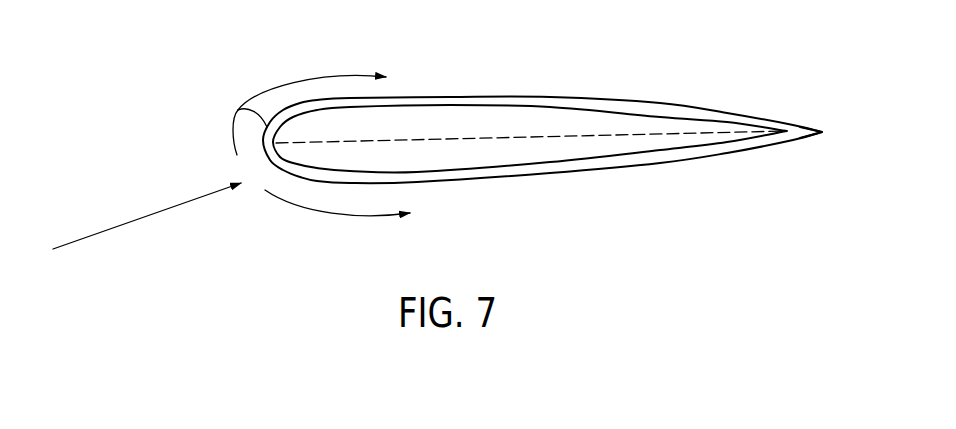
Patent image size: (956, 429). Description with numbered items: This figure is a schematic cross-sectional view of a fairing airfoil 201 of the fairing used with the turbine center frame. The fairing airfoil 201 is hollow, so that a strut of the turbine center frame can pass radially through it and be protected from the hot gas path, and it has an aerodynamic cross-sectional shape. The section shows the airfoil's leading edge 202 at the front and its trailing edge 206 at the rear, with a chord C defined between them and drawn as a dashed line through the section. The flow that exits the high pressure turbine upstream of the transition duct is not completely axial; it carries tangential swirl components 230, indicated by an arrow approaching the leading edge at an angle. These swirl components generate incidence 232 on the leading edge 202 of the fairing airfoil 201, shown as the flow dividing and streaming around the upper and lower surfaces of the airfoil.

The fairing airfoil 201 is at (458, 97).
The leading edge 202 is at (238, 110).
The trailing edge 206 is at (822, 130).
The tangential swirl components 230 is at (152, 213).
The incidence 232 is at (232, 136).
The chord C is at (603, 120).